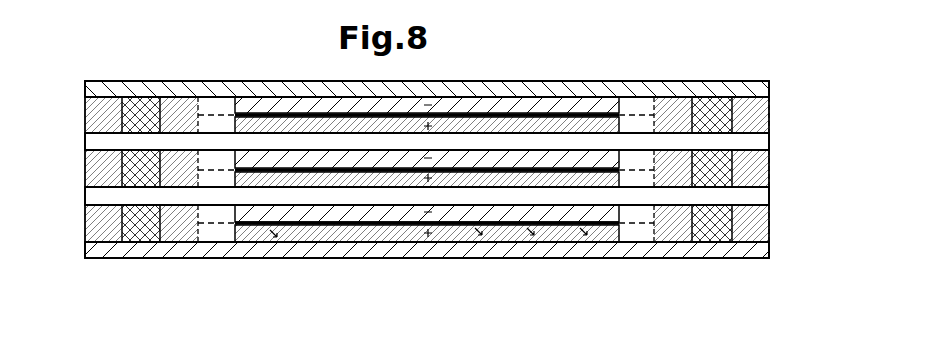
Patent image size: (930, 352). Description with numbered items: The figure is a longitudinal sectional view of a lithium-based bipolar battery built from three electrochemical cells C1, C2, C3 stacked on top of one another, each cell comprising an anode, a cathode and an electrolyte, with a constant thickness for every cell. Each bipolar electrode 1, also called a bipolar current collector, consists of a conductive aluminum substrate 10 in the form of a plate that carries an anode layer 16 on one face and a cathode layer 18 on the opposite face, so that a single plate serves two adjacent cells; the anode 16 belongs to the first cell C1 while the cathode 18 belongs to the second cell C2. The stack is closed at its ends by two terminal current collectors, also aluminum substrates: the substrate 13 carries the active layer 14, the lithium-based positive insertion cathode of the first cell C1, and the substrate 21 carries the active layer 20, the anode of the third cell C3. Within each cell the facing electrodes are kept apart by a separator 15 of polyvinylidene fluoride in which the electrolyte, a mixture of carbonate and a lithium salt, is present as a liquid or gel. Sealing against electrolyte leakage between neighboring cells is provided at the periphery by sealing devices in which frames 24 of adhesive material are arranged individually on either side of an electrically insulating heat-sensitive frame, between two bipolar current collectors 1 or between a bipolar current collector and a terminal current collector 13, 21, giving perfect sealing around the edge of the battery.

The bipolar electrode 1 is at (65, 108).
The conductive aluminum substrate 10 is at (145, 140).
The conductive aluminum substrate 13 is at (718, 245).
The active layer 14 is at (347, 245).
The separator 15 is at (213, 117).
The anode layer 16 is at (570, 212).
The cathode layer 18 is at (513, 108).
The active layer 20 is at (612, 110).
The conductive aluminum substrate 21 is at (712, 104).
The frame of adhesive material 24 is at (677, 110).
The first cell C1 is at (778, 205).
The second cell C2 is at (778, 187).
The third cell C3 is at (778, 82).